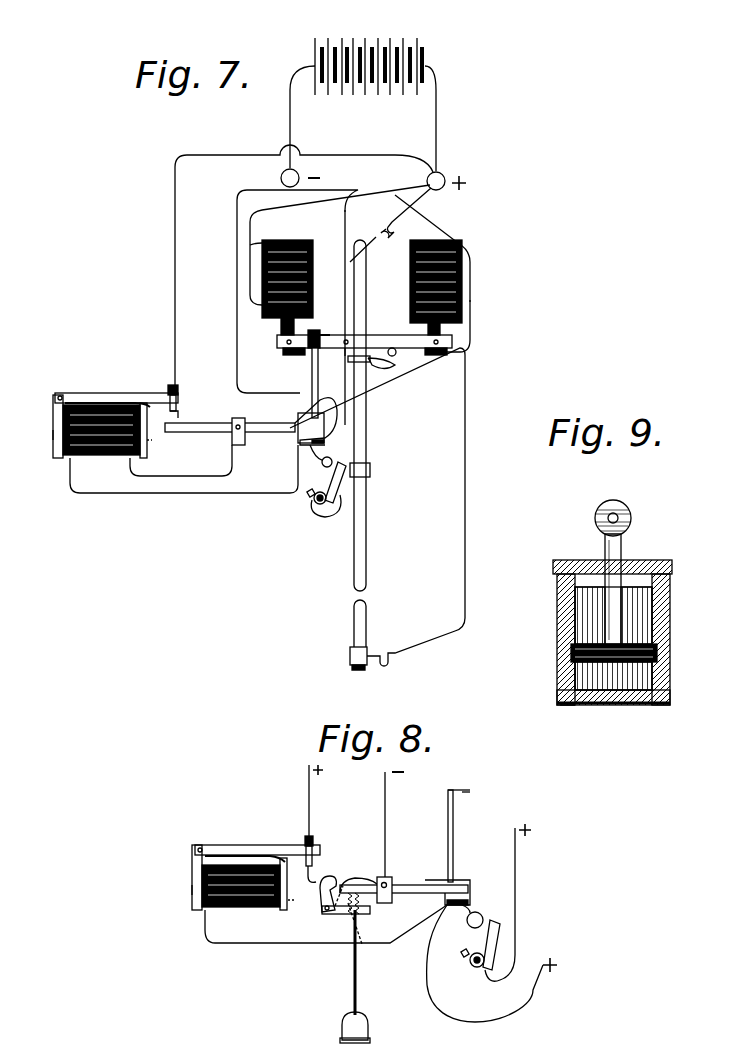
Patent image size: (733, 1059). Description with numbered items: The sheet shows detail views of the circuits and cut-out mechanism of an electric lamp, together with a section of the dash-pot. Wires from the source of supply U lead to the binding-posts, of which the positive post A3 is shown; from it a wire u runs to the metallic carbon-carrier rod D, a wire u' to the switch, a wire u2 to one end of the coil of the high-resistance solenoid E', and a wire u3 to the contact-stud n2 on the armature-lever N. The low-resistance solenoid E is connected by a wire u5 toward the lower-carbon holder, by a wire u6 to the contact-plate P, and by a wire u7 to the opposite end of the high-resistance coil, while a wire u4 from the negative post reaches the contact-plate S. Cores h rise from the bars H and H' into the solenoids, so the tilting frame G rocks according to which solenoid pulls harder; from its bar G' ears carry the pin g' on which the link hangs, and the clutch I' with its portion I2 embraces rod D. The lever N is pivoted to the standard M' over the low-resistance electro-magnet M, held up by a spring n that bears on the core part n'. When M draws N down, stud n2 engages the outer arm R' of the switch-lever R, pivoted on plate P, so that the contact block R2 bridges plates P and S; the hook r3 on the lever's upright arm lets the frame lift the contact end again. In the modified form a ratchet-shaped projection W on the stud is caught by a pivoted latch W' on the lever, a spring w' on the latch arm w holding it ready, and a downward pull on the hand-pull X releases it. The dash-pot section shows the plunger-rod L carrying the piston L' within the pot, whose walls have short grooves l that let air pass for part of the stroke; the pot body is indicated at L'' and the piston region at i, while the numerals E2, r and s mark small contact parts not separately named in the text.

In FIG. 7, the source of supply U is at (363, 94).
In FIG. 8, the standard M' is at (178, 889).
In FIG. 7, the positive binding-post A3 is at (441, 174).
In FIG. 7, the wire u is at (393, 225).
In FIG. 7, the wire u' is at (236, 482).
In FIG. 8, the wire u' is at (437, 902).
In FIG. 7, the wire u2 is at (340, 240).
In FIG. 7, the wire u3 is at (304, 265).
In FIG. 8, the wire u3 is at (307, 800).
In FIG. 7, the wire u4 is at (184, 476).
In FIG. 8, the wire u4 is at (326, 865).
In FIG. 7, the wire u5 is at (336, 507).
In FIG. 7, the wire u6 is at (471, 272).
In FIG. 8, the wire u6 is at (492, 963).
In FIG. 7, the wire u7 is at (435, 273).
In FIG. 7, the arm of the latch w is at (337, 244).
In FIG. 7, the spring w' is at (288, 307).
In FIG. 7, the low-resistance solenoid E is at (427, 287).
In FIG. 7, the high-resistance solenoid E' is at (287, 279).
In FIG. 7, the contact E2 is at (351, 355).
In FIG. 7, the cylindrical arm h is at (281, 328).
In FIG. 7, the tilting frame G is at (364, 339).
In FIG. 7, the bar G' is at (402, 351).
In FIG. 7, the bar H is at (436, 356).
In FIG. 7, the bar H' is at (293, 358).
In FIG. 7, the hook r3 is at (320, 328).
In FIG. 8, the hook r3 is at (473, 785).
In FIG. 7, the pin g' is at (335, 324).
In FIG. 7, the carbon-carrier rod-clutch I' is at (359, 370).
In FIG. 7, the clutch portion I2 is at (381, 371).
In FIG. 7, the contact block R2 is at (315, 383).
In FIG. 7, the carrier-rod D is at (366, 455).
In FIG. 7, the armature-lever N is at (118, 395).
In FIG. 8, the armature-lever N is at (256, 840).
In FIG. 7, the spring n is at (163, 391).
In FIG. 8, the spring n is at (295, 845).
In FIG. 7, the core part n' is at (157, 444).
In FIG. 8, the core part n' is at (298, 900).
In FIG. 7, the contact-stud n2 is at (181, 409).
In FIG. 8, the contact-stud n2 is at (322, 867).
In FIG. 7, the low-resistance electro-magnet M is at (100, 434).
In FIG. 8, the low-resistance electro-magnet M is at (239, 885).
In FIG. 7, the switch-lever R is at (251, 421).
In FIG. 8, the switch-lever R is at (405, 891).
In FIG. 8, the outer arm R' is at (377, 891).
In FIG. 7, the contact-plate P is at (232, 436).
In FIG. 8, the contact-plate P is at (389, 896).
In FIG. 7, the contact-plate S is at (311, 428).
In FIG. 7, the contact lever r is at (312, 496).
In FIG. 8, the contact lever r is at (478, 952).
In FIG. 8, the contact ball s is at (468, 903).
In FIG. 8, the ratchet-shaped projection W is at (333, 886).
In FIG. 8, the pivoted latch W' is at (337, 925).
In FIG. 8, the hand-pull X is at (355, 984).
In FIG. 9, the plunger-rod L is at (616, 572).
In FIG. 9, the piston L' is at (602, 632).
In FIG. 9, the cylinder base L'' is at (570, 717).
In FIG. 9, the grooves l is at (672, 630).
In FIG. 9, the piston i is at (555, 672).